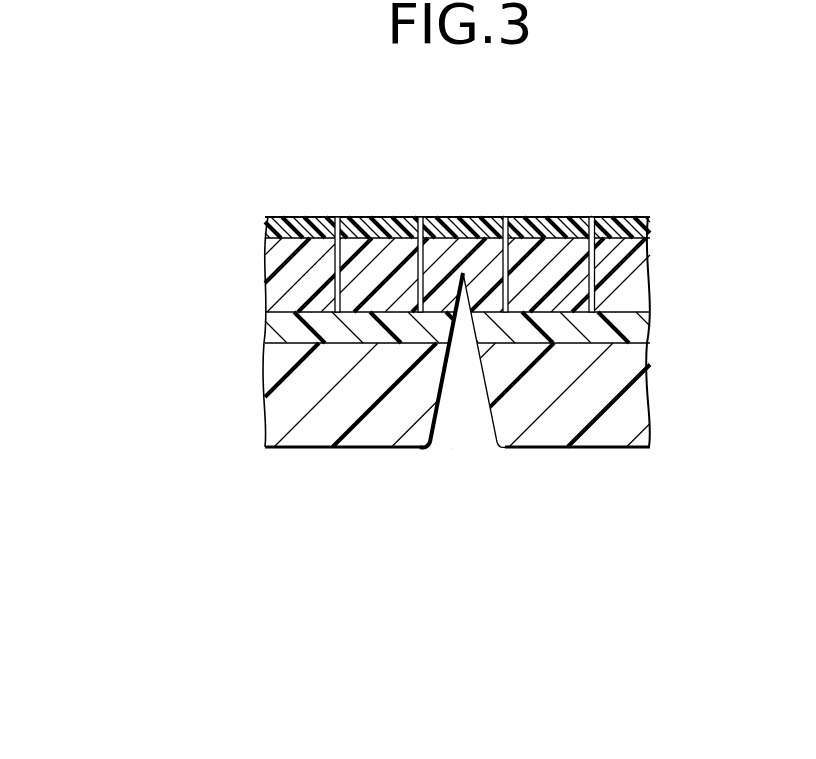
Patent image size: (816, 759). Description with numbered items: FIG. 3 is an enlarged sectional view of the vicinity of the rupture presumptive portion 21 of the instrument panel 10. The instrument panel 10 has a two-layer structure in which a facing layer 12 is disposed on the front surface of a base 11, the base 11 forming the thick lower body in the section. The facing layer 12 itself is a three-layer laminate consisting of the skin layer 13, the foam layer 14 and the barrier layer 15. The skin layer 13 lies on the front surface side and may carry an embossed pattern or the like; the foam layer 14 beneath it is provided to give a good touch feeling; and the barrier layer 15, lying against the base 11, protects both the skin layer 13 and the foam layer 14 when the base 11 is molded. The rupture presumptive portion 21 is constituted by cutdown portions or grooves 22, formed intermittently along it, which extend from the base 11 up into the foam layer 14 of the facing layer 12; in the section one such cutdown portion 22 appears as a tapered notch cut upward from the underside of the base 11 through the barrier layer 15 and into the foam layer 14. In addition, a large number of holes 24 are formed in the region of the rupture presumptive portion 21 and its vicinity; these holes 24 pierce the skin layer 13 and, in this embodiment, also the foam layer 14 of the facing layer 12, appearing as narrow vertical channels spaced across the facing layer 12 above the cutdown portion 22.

The instrument panel 10 is at (112, 252).
The base 11 is at (270, 382).
The facing layer 12 is at (187, 203).
The skin layer 13 is at (268, 231).
The foam layer 14 is at (268, 286).
The barrier layer 15 is at (268, 332).
The rupture presumptive portion 21 is at (462, 183).
The cutdown portion 22 is at (467, 417).
The hole 24 is at (418, 217).